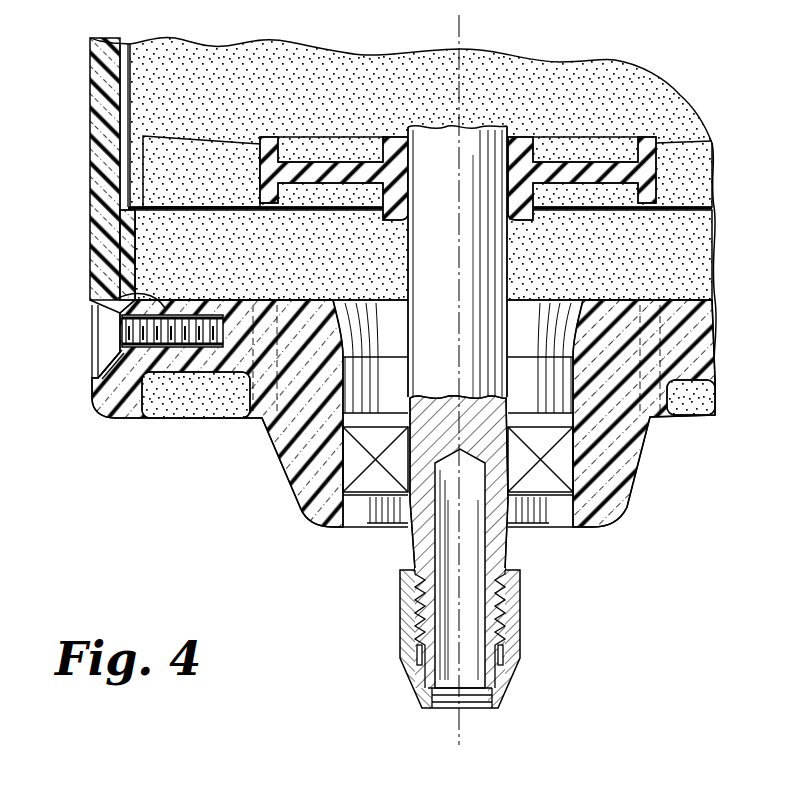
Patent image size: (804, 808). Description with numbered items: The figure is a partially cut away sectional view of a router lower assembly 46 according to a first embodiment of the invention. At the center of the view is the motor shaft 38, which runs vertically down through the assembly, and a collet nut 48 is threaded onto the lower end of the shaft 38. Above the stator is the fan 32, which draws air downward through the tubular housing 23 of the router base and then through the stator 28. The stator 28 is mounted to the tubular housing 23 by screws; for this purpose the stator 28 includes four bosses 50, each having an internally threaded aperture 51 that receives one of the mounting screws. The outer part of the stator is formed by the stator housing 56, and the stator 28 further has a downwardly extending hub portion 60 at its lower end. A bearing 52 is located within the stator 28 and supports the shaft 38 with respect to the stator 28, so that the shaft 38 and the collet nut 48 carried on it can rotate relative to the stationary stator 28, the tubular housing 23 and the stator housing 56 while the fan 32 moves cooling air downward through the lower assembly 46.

The tubular housing 23 is at (90, 133).
The fan 32 is at (212, 153).
The shaft 38 is at (520, 268).
The stator housing 56 is at (128, 244).
The bosses 50 is at (120, 300).
The stator 28 is at (123, 405).
The internally threaded apertures 51 is at (182, 348).
The router lower assembly 46 is at (250, 448).
The downwardly extending hub portion 60 is at (302, 505).
The bearing 52 is at (548, 480).
The collet nut 48 is at (522, 657).